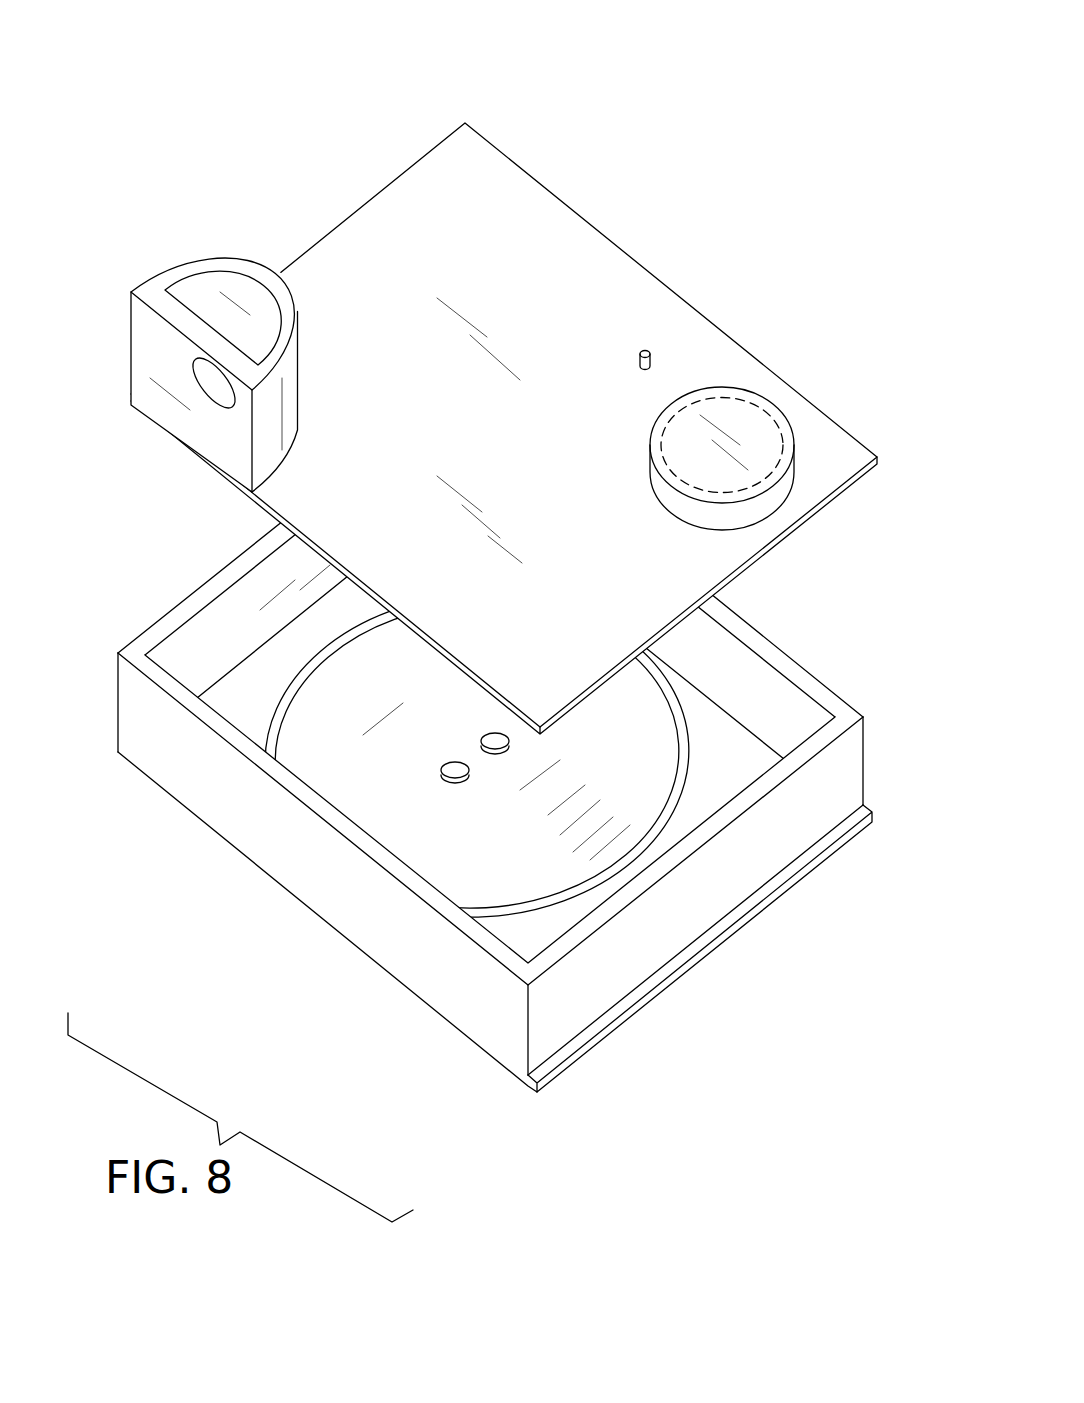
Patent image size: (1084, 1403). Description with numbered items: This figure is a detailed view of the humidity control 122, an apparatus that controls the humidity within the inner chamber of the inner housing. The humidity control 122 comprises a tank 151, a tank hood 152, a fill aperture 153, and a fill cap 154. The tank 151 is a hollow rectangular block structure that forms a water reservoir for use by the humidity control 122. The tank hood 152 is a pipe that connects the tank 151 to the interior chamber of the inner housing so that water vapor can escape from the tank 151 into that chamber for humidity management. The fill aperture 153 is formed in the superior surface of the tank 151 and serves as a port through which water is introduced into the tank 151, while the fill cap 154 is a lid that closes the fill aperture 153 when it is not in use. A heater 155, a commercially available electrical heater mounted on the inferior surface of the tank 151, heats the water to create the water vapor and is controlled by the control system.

The humidity control 122 is at (512, 551).
The tank 151 is at (750, 873).
The tank hood 152 is at (174, 347).
The fill aperture 153 is at (796, 412).
The fill cap 154 is at (785, 487).
The heater 155 is at (637, 782).